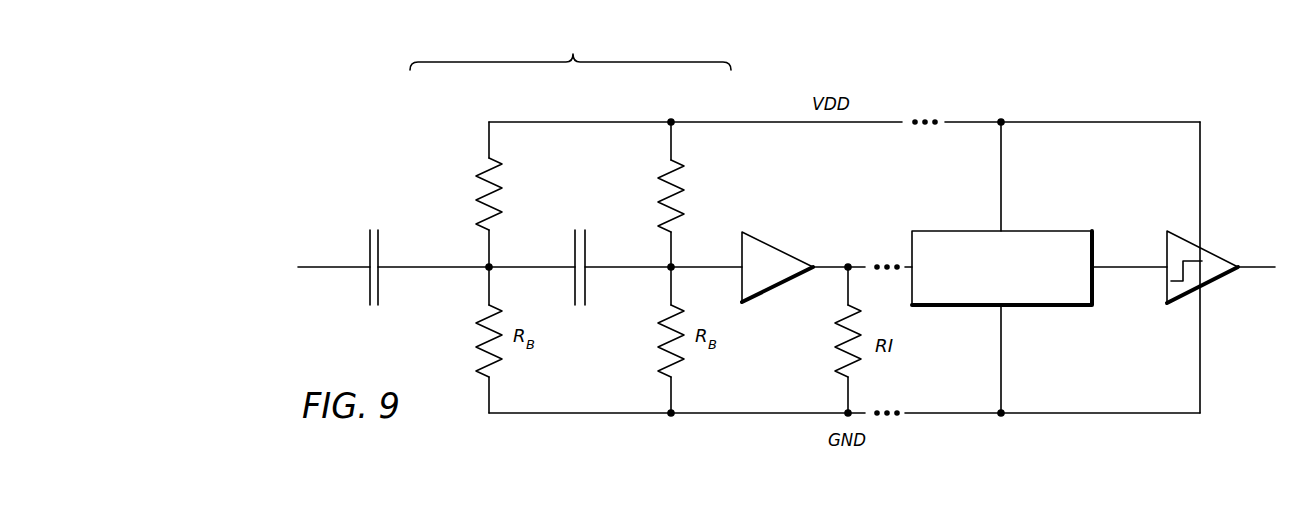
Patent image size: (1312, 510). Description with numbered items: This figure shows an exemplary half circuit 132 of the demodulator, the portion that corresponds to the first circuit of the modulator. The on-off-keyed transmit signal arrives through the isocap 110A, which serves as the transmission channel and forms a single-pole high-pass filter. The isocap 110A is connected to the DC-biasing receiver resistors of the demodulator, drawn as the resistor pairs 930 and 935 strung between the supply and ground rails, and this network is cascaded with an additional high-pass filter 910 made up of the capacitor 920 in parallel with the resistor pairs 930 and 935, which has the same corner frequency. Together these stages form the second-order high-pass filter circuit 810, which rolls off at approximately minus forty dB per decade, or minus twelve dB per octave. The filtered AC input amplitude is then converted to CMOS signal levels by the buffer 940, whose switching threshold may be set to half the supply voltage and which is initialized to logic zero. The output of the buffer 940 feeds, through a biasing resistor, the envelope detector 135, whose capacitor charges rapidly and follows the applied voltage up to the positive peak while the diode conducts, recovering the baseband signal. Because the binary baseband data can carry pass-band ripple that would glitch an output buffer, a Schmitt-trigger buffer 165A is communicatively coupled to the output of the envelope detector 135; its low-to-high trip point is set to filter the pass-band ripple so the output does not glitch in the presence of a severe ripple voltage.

The second-order high-pass filter circuit 810 is at (570, 49).
The additional high-pass filter 910 is at (578, 381).
The isocap 110A is at (370, 263).
The resistor pair 930 is at (458, 196).
The capacitor C2 920 is at (588, 262).
The resistor pair 935 is at (698, 166).
The buffer B1 940 is at (775, 245).
The envelope detector 135 is at (1047, 231).
The Schmitt-trigger buffer 165A is at (1222, 258).
The half circuit 132 is at (1090, 62).